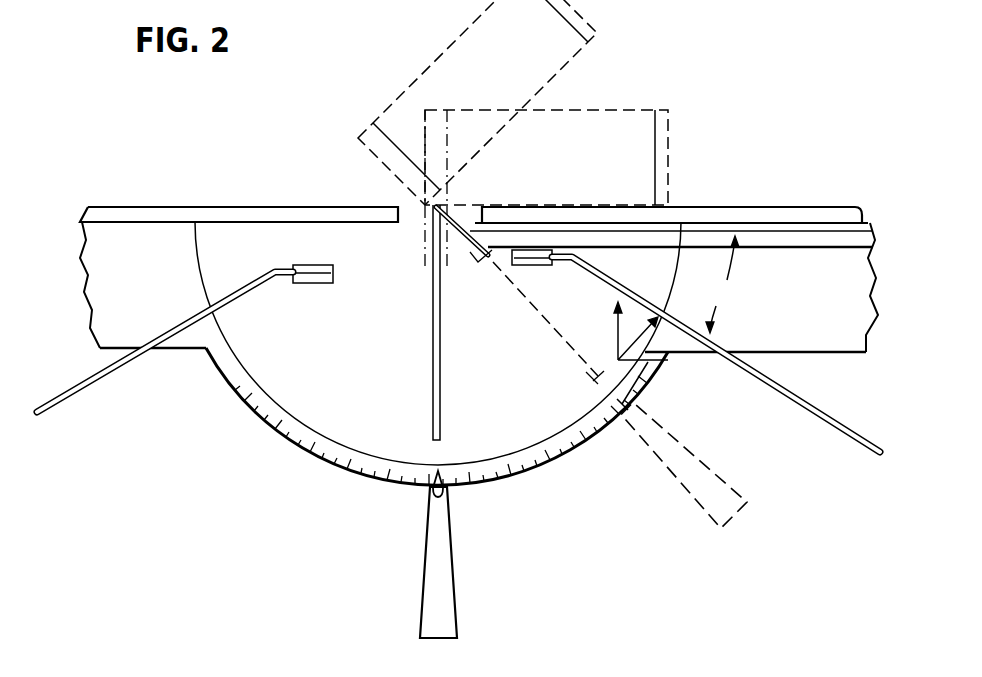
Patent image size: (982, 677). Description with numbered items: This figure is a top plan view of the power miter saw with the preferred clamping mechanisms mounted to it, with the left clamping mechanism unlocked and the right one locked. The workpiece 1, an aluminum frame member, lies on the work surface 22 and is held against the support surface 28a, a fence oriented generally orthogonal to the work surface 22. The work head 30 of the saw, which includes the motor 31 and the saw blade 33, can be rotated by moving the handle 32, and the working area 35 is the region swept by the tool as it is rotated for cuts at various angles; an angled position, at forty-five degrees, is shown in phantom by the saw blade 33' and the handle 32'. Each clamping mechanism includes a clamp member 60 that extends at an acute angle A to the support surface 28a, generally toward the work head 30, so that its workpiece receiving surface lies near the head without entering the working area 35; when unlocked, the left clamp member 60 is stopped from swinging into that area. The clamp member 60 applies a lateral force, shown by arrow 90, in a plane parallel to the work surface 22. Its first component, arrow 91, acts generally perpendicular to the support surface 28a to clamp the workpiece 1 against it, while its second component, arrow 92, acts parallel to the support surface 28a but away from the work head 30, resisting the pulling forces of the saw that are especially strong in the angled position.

The workpiece 1 is at (716, 230).
The work surface 22 is at (828, 312).
The support surface 28a is at (218, 224).
The work head 30 is at (438, 123).
The motor 31 is at (655, 125).
The handle 32 is at (462, 554).
The handle (phantom position) 32' is at (703, 461).
The saw blade 33 is at (455, 275).
The saw blade (phantom position) 33' is at (523, 294).
The working area 35 is at (368, 376).
The clamp member 60 is at (62, 394).
The arrow (lateral force) 90 is at (640, 330).
The arrow (first force component) 91 is at (588, 366).
The arrow (second force component) 92 is at (650, 364).
The angle A is at (722, 284).